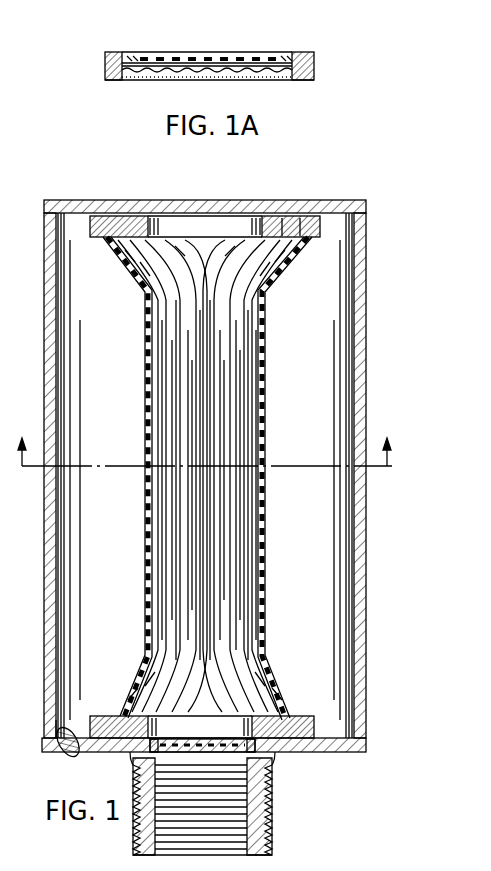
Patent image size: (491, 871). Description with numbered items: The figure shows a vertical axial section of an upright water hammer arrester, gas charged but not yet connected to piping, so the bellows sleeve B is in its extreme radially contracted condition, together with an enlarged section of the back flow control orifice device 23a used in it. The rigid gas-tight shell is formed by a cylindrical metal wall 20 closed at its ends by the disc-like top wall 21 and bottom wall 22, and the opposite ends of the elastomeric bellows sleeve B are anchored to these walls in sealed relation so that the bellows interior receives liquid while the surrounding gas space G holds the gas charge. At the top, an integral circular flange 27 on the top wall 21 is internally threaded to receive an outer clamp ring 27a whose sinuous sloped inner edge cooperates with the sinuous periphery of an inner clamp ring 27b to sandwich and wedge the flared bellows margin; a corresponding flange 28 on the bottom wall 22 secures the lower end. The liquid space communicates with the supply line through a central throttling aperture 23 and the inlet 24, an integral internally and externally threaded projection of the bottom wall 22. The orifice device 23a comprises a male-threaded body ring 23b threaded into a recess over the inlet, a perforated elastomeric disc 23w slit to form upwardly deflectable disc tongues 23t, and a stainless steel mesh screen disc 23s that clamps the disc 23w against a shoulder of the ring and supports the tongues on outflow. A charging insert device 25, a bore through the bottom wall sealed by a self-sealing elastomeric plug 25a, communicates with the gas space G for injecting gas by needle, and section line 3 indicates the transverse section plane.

In FIG. 1, the cylindrical metal wall 20 is at (362, 526).
In FIG. 1, the top wall 21 is at (345, 202).
In FIG. 1, the bottom wall 22 is at (335, 752).
In FIG. 1A, the throttling aperture 23 is at (215, 58).
In FIG. 1, the throttling aperture 23 is at (230, 712).
In FIG. 1A, the back flow control orifice device 23a is at (290, 58).
In FIG. 1, the back flow control orifice device 23a is at (245, 707).
In FIG. 1A, the body ring 23b is at (312, 58).
In FIG. 1A, the mesh screen disc 23s is at (292, 82).
In FIG. 1A, the disc tongues 23t is at (167, 53).
In FIG. 1A, the elastomeric disc 23w is at (165, 54).
In FIG. 1, the inlet 24 is at (135, 790).
In FIG. 1, the charging insert device 25 is at (60, 754).
In FIG. 1, the elastomeric plug 25a is at (70, 725).
In FIG. 1, the circular flange 27 is at (322, 230).
In FIG. 1, the outer clamp ring 27a is at (305, 225).
In FIG. 1, the inner clamp ring 27b is at (280, 222).
In FIG. 1, the bottom flange 28 is at (318, 728).
In FIG. 1, the bellows sleeve B is at (270, 366).
In FIG. 1, the gas space G is at (316, 279).
In FIG. 1, the section line 3- 3 is at (203, 441).